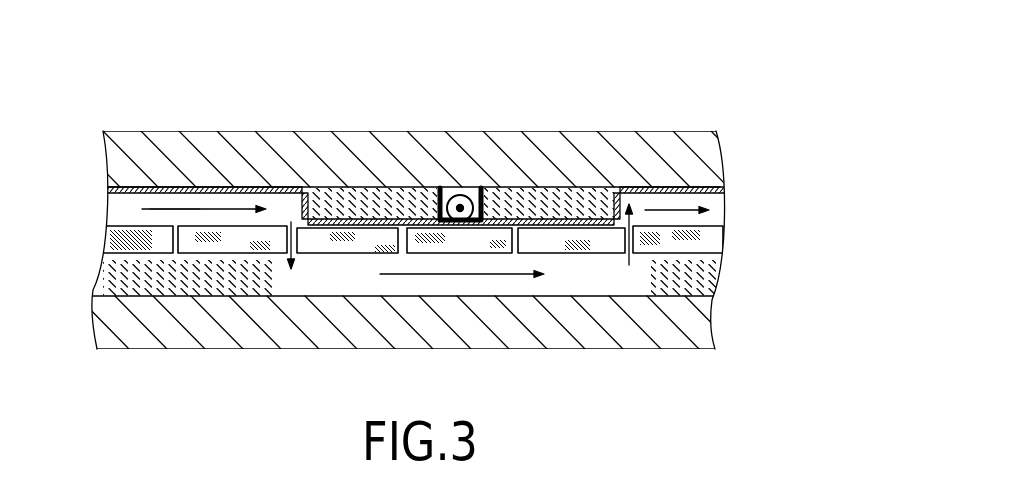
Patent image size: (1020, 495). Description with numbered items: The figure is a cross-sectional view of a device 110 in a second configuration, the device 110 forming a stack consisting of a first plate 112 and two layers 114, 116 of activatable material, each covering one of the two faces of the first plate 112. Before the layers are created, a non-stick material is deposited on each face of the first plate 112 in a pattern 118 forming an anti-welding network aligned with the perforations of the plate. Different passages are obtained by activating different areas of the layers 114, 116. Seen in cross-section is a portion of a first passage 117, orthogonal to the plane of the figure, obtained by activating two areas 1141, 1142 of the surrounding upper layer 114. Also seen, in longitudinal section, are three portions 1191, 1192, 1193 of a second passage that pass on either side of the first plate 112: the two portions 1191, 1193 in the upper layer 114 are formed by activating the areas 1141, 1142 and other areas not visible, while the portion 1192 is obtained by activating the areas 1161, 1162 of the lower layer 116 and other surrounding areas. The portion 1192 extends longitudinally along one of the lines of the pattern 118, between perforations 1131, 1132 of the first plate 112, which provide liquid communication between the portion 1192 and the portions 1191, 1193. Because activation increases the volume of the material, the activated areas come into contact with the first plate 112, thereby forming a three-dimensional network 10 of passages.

The device 110 is at (400, 183).
The three-dimensional network 10 is at (212, 203).
The upper layer of activatable material 114 is at (667, 152).
The lower layer of activatable material 116 is at (517, 336).
The pattern of non-stick material 118 is at (707, 191).
The first plate 112 is at (713, 240).
The first passage 117 is at (461, 195).
The activated area of the upper layer 1141 is at (548, 200).
The activated area of the upper layer 1142 is at (372, 200).
The activated area of the lower layer 1161 is at (720, 283).
The activated area of the lower layer 1162 is at (98, 277).
The portion of the second passage 1191 is at (120, 212).
The portion of the second passage 1192 is at (413, 278).
The portion of the second passage 1193 is at (713, 208).
The perforation 1131 is at (272, 298).
The perforation 1132 is at (622, 258).